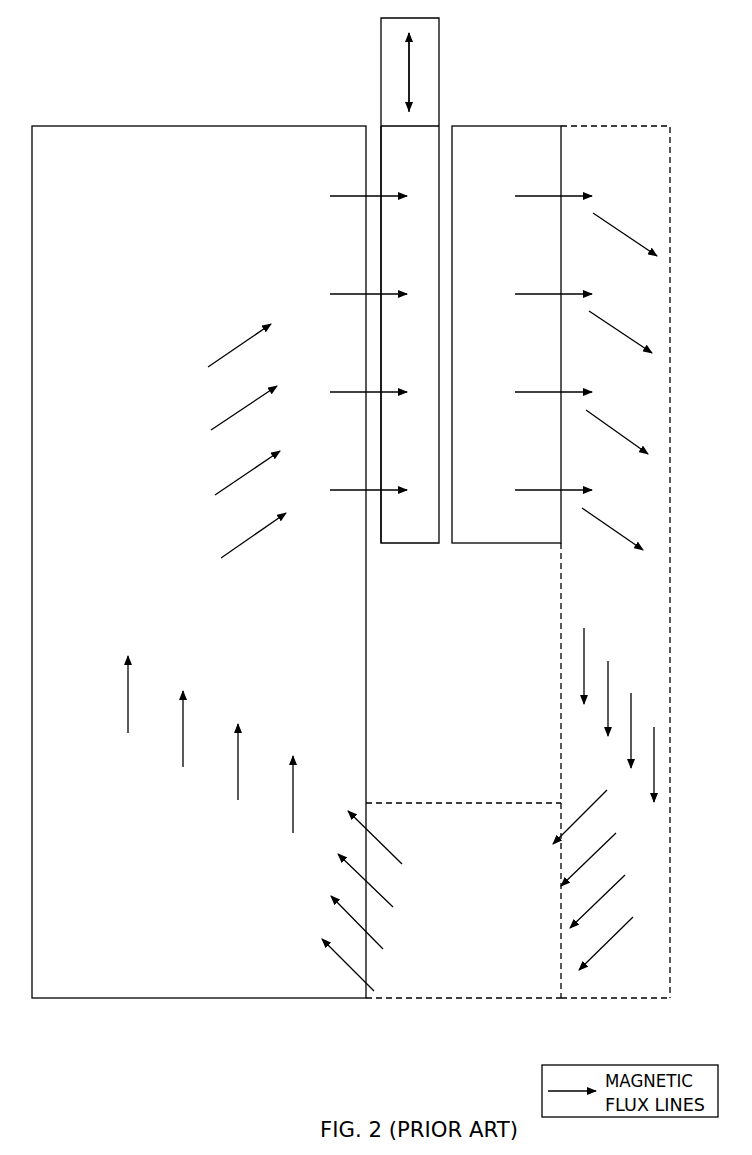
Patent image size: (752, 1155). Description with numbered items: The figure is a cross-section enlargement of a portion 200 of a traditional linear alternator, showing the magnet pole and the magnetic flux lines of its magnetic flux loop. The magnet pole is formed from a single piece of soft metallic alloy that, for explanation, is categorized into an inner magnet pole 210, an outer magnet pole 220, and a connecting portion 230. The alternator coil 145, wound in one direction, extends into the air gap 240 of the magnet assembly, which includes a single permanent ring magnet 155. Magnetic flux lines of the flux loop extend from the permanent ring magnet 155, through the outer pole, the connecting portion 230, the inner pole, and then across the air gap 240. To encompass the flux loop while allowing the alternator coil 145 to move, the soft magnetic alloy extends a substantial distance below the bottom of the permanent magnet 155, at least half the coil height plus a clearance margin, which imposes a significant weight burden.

The inner magnet pole 210 is at (93, 126).
The alternator coil 145 is at (381, 136).
The permanent ring magnet 155 is at (503, 126).
The portion of the traditional linear alternator 200 is at (592, 112).
The outer magnet pole 220 is at (671, 980).
The connecting portion 230 is at (504, 999).
The air gap 240 is at (372, 547).